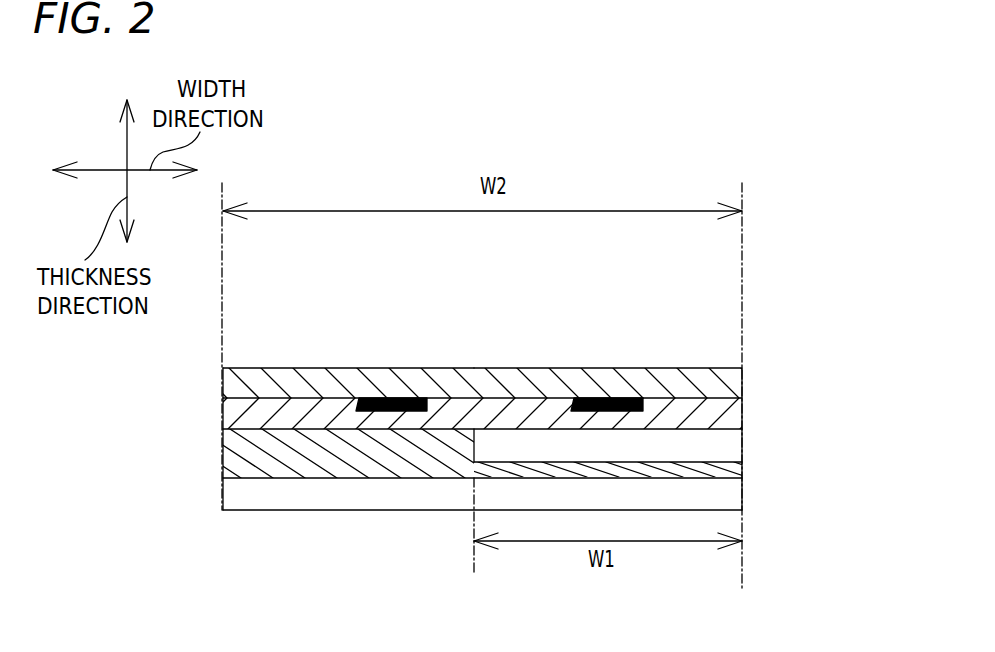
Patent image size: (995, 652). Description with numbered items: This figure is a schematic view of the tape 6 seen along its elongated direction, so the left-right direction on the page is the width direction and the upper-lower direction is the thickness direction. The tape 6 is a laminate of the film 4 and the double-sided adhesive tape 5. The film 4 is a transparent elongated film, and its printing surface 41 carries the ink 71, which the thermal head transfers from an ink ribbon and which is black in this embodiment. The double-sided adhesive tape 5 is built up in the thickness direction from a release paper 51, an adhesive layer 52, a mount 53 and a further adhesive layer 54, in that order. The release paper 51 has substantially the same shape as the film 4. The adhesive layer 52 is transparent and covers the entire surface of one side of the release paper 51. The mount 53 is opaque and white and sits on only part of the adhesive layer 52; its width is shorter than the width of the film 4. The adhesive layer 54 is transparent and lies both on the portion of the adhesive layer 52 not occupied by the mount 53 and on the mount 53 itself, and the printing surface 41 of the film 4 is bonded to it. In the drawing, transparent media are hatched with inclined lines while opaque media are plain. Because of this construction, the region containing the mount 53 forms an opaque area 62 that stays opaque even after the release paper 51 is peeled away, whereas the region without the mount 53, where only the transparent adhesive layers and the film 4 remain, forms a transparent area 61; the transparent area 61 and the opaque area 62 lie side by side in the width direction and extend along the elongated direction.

The film 4 is at (742, 377).
The printing surface 41 is at (470, 408).
The double-sided adhesive tape 5 is at (516, 455).
The release paper 51 is at (522, 495).
The adhesive layer 52 is at (742, 470).
The mount 53 is at (742, 440).
The adhesive layer 54 is at (742, 405).
The tape 6 is at (481, 374).
The transparent area 61 is at (373, 358).
The opaque area 62 is at (608, 310).
The ink 71 is at (600, 398).